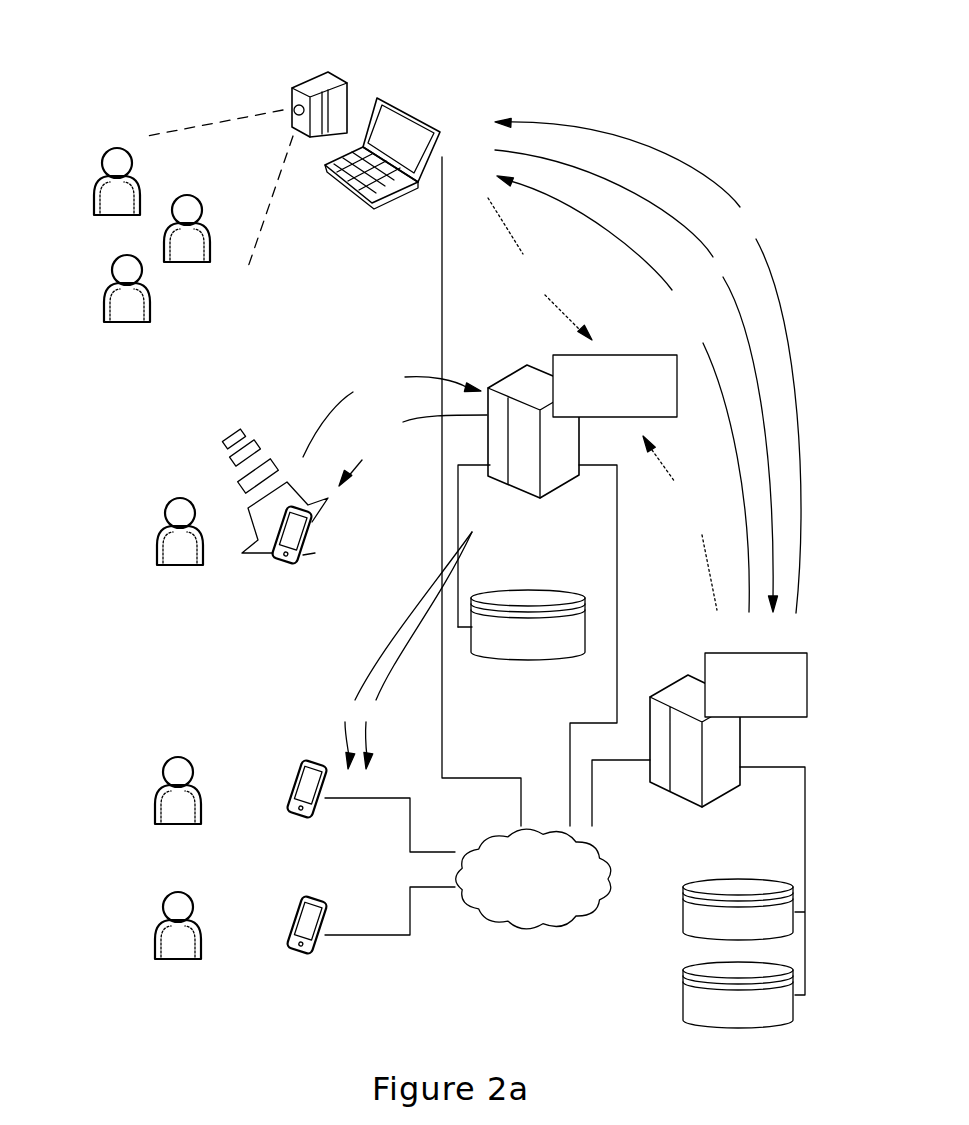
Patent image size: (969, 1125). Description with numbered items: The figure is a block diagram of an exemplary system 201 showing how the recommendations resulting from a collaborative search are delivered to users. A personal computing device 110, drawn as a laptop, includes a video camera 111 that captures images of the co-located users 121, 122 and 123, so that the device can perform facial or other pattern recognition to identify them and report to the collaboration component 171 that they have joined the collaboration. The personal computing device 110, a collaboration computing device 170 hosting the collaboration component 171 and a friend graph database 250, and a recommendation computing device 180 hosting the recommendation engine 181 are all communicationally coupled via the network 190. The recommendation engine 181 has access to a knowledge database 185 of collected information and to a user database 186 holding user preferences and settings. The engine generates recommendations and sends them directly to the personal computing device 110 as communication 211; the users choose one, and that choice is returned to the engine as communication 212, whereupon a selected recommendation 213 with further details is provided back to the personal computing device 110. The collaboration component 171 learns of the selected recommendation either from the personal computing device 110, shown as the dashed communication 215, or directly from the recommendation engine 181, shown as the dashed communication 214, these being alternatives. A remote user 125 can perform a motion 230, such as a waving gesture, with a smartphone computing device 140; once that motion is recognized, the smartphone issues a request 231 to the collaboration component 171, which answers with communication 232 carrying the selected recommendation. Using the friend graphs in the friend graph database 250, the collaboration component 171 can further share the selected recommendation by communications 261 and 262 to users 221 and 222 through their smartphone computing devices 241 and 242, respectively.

The system 201 is at (197, 42).
The personal computing device 110 is at (432, 116).
The video camera 111 is at (318, 72).
The user 121 is at (136, 166).
The user 122 is at (204, 213).
The user 123 is at (152, 298).
The user 125 is at (163, 515).
The smartphone computing device 140 is at (308, 556).
The collaboration computing device 170 is at (579, 427).
The collaboration component 171 is at (677, 367).
The recommendation computing device 180 is at (648, 720).
The recommendation engine 181 is at (743, 652).
The knowledge database 185 is at (723, 898).
The user database 186 is at (723, 980).
The network 190 is at (521, 853).
The communication 211 is at (568, 124).
The communication 212 is at (588, 165).
The selected recommendation 213 is at (541, 193).
The communication 214 is at (706, 555).
The communication 215 is at (500, 222).
The user 221 is at (162, 776).
The user 222 is at (162, 911).
The motion 230 is at (231, 455).
The request 231 is at (312, 442).
The communication 232 is at (433, 416).
The smartphone computing device 241 is at (297, 762).
The smartphone computing device 242 is at (297, 900).
The friend graph database 250 is at (512, 609).
The communication 261 is at (365, 703).
The communication 262 is at (380, 698).